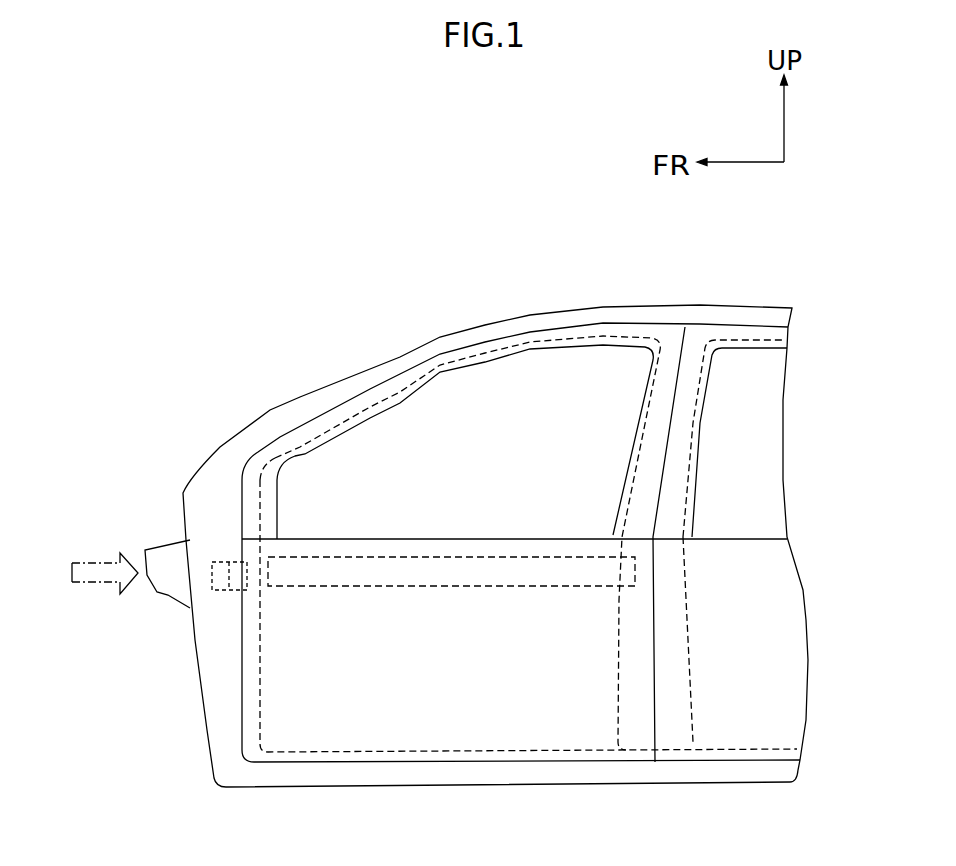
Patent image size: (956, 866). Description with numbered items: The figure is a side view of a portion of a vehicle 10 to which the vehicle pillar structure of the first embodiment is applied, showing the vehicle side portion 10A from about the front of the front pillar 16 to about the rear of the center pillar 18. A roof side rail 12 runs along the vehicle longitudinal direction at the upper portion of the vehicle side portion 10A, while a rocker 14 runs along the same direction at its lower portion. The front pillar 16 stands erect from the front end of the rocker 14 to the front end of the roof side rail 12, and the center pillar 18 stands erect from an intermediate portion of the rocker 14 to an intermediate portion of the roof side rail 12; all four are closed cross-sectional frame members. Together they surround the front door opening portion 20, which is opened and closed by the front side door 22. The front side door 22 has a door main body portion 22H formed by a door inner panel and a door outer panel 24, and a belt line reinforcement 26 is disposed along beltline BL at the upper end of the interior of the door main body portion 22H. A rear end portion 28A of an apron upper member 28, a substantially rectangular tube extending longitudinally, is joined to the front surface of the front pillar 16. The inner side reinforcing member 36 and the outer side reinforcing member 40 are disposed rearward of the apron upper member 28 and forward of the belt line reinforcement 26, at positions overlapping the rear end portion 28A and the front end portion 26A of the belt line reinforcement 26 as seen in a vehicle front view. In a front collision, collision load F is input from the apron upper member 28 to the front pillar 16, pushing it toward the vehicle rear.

The vehicle 10 is at (517, 228).
The vehicle side portion 10A is at (402, 330).
The roof side rail 12 is at (605, 317).
The rocker 14 is at (507, 787).
The front pillar 16 is at (215, 620).
The center pillar 18 is at (628, 625).
The front door opening portion 20 is at (447, 372).
The front side door 22 is at (283, 658).
The door main body portion 22H is at (422, 543).
The door outer panel 24 is at (287, 682).
The belt line reinforcement 26 is at (408, 577).
The front end portion of the belt line reinforcement 26A is at (282, 532).
The apron upper member 28 is at (158, 543).
The rear end portion of the apron upper member 28A is at (188, 538).
The inner side reinforcing member 36 is at (233, 597).
The outer side reinforcing member 40 is at (220, 553).
The beltline BL is at (520, 538).
The collision load F is at (90, 582).